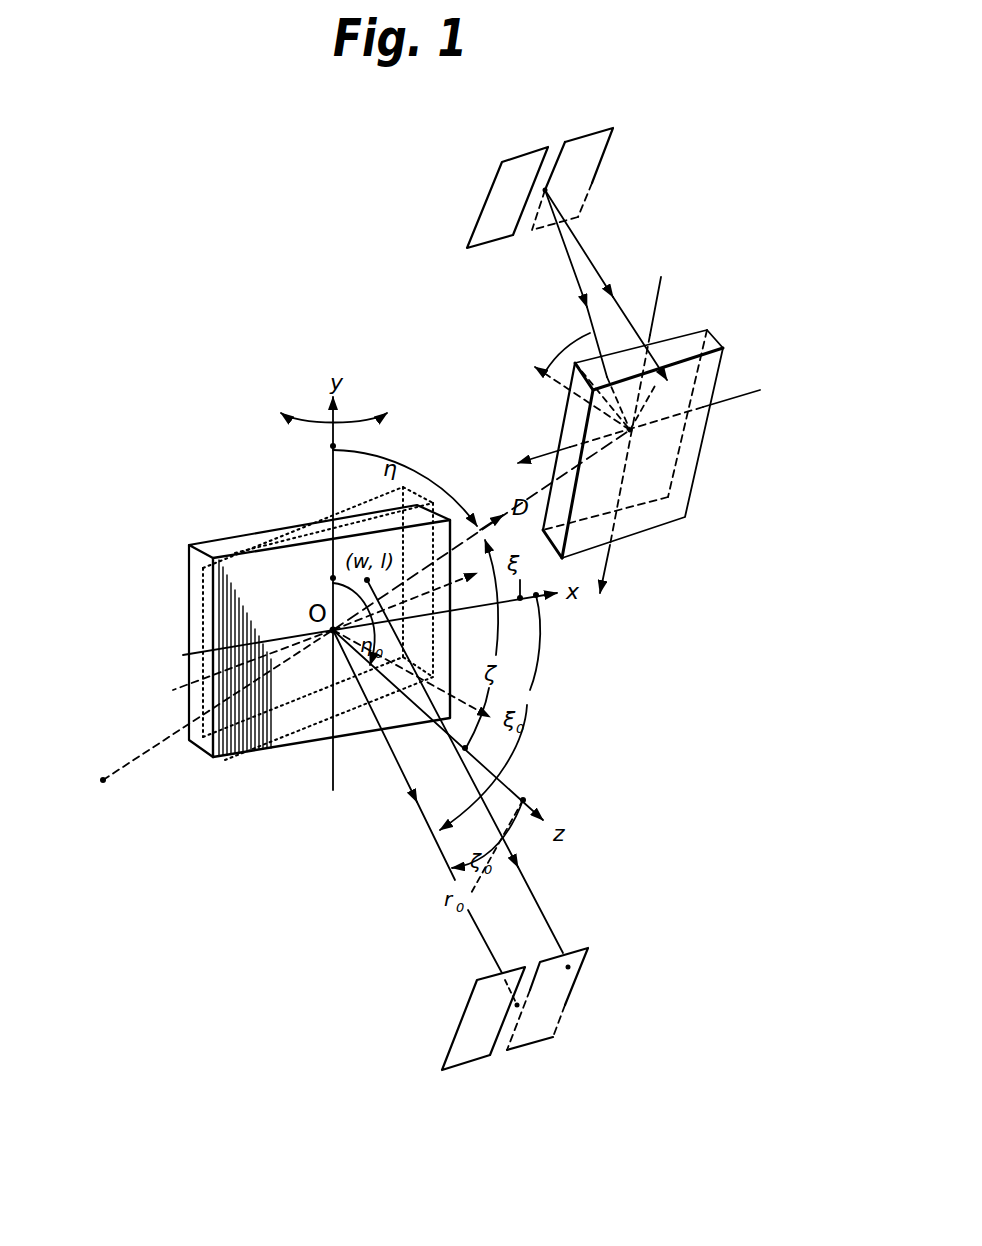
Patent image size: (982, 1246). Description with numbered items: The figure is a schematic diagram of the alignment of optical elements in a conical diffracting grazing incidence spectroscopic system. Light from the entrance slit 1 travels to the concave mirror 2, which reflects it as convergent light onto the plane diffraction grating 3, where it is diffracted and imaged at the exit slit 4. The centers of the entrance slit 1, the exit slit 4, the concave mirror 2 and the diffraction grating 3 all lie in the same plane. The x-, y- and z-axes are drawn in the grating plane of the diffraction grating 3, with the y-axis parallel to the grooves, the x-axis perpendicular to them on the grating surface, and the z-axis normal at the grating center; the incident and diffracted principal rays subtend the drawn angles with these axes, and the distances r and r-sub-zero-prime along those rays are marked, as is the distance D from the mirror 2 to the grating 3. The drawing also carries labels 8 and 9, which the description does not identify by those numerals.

The entrance slit 1 is at (490, 197).
The concave mirror 2 is at (697, 497).
The plane diffraction grating 3 is at (190, 565).
The exit slit 4 is at (473, 997).
The reference point 8 is at (200, 713).
The hologram region 9 is at (240, 752).